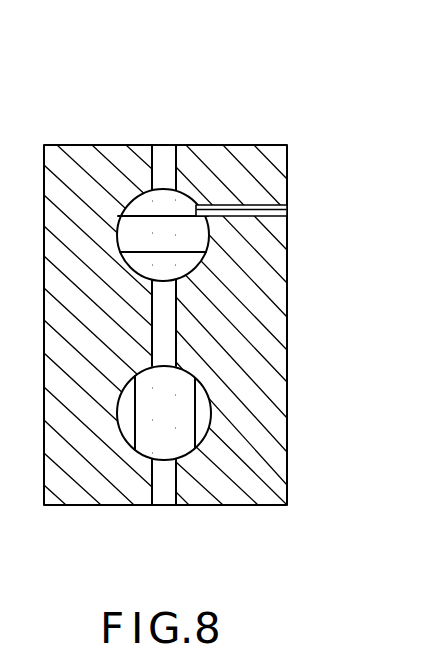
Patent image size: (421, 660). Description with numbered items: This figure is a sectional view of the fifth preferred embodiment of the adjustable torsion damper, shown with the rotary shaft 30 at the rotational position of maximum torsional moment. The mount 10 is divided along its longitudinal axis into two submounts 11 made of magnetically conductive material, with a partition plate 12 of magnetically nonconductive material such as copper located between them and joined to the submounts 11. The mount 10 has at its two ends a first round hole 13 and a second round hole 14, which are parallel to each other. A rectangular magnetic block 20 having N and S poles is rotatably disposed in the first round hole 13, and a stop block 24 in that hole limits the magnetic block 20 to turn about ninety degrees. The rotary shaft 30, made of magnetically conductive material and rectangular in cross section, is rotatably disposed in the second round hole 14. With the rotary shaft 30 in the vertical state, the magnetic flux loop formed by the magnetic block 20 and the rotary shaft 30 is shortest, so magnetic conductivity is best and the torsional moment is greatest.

The mount 10 is at (203, 265).
The submounts 11 is at (95, 160).
The partition plate 12 is at (158, 162).
The first round hole 13 is at (193, 269).
The second round hole 14 is at (205, 438).
The magnetic block 20 is at (212, 228).
The stop block 24 is at (256, 204).
The rotary shaft 30 is at (180, 400).